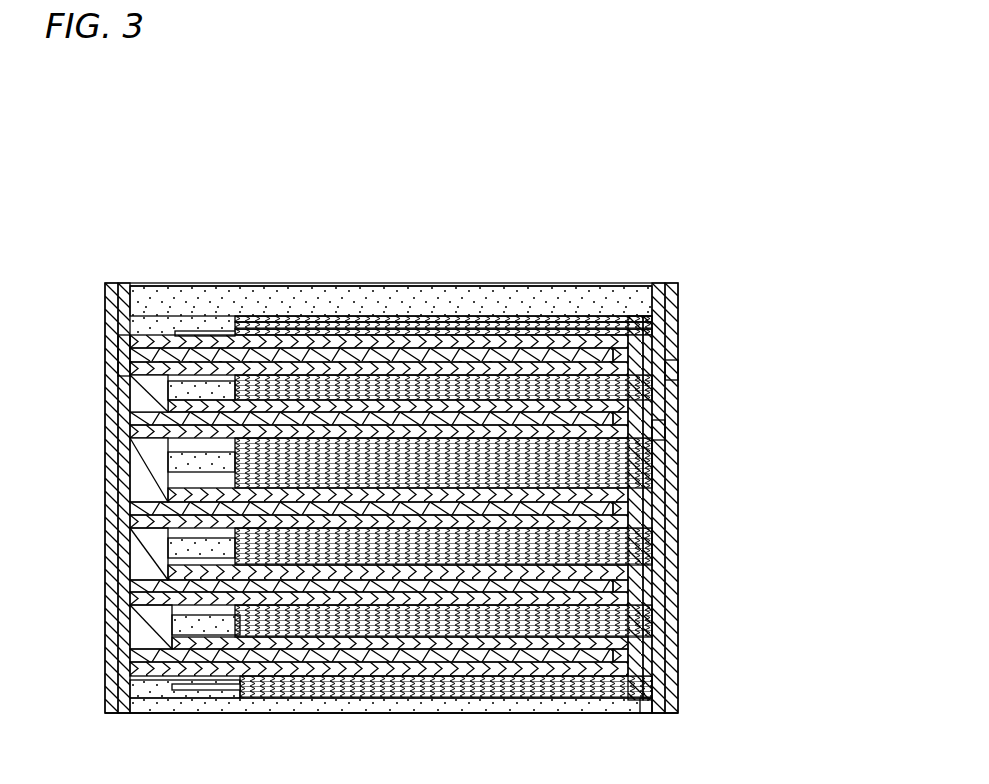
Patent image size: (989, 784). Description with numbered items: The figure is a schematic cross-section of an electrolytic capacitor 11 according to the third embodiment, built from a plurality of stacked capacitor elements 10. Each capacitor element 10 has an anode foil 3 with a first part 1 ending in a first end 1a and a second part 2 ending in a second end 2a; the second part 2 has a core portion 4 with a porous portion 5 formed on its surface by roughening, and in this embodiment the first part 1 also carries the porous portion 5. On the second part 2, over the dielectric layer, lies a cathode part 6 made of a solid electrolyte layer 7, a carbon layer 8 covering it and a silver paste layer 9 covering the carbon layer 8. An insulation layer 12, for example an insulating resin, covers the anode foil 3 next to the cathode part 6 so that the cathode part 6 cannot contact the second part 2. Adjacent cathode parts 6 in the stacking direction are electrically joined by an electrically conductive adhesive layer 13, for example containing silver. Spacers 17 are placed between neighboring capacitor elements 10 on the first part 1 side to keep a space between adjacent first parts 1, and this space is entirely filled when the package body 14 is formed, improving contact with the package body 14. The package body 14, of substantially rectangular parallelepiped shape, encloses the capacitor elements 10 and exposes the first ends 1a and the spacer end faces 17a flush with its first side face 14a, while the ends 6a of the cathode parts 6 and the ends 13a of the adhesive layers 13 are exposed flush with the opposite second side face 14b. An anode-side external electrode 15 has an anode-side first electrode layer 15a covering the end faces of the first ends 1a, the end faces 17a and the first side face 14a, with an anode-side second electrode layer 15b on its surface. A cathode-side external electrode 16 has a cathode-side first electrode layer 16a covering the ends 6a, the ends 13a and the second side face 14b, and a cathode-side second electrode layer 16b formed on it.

The first part 1 is at (379, 279).
The first end 1a is at (115, 352).
The second part 2 is at (218, 183).
The second end 2a is at (625, 325).
The anode foil 3 is at (391, 291).
The core portion 4 is at (212, 352).
The porous portion 5 is at (200, 342).
The cathode part 6 is at (413, 259).
The end of the cathode part 6a is at (662, 430).
The solid electrolyte layer 7 is at (413, 318).
The carbon layer 8 is at (447, 318).
The silver paste layer 9 is at (422, 218).
The capacitor element 10 is at (432, 698).
The electrolytic capacitor 11 is at (630, 161).
The insulation layer 12 is at (190, 352).
The adhesive layer 13 is at (548, 355).
The end of the adhesive layer 13a is at (678, 373).
The package body 14 is at (392, 718).
The first side face 14a is at (115, 697).
The second side face 14b is at (677, 697).
The anode-side external electrode 15 is at (67, 498).
The anode-side first electrode layer 15a is at (110, 558).
The anode-side second electrode layer 15b is at (112, 595).
The cathode-side external electrode 16 is at (718, 498).
The cathode-side first electrode layer 16a is at (657, 580).
The cathode-side second electrode layer 16b is at (670, 610).
The spacer 17 is at (145, 462).
The end face of the spacer 17a is at (128, 472).